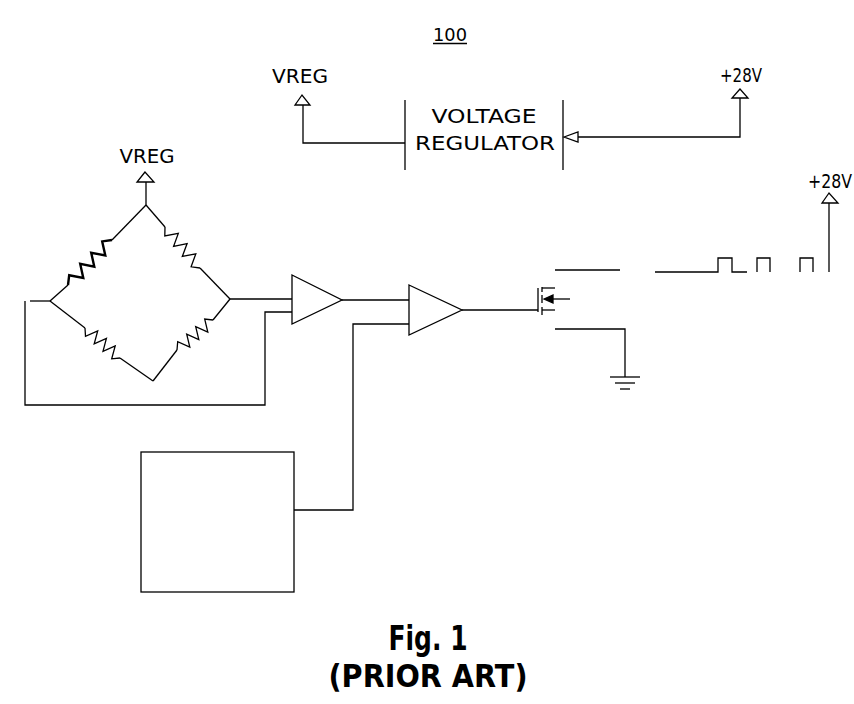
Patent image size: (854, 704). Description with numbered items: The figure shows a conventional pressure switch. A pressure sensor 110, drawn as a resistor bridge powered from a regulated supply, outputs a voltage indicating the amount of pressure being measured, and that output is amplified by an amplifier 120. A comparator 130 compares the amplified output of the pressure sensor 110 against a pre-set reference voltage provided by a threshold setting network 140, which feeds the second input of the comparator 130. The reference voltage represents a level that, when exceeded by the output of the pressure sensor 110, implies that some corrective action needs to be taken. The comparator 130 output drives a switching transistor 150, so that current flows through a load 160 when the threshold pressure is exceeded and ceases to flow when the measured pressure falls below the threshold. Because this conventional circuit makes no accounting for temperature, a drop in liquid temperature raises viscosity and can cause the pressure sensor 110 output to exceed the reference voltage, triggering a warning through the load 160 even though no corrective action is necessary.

The pressure sensor 110 is at (57, 288).
The amplifier 120 is at (330, 287).
The comparator 130 is at (420, 285).
The threshold setting network 140 is at (142, 520).
The MOSFET switch 150 is at (540, 275).
The load 160 is at (737, 273).